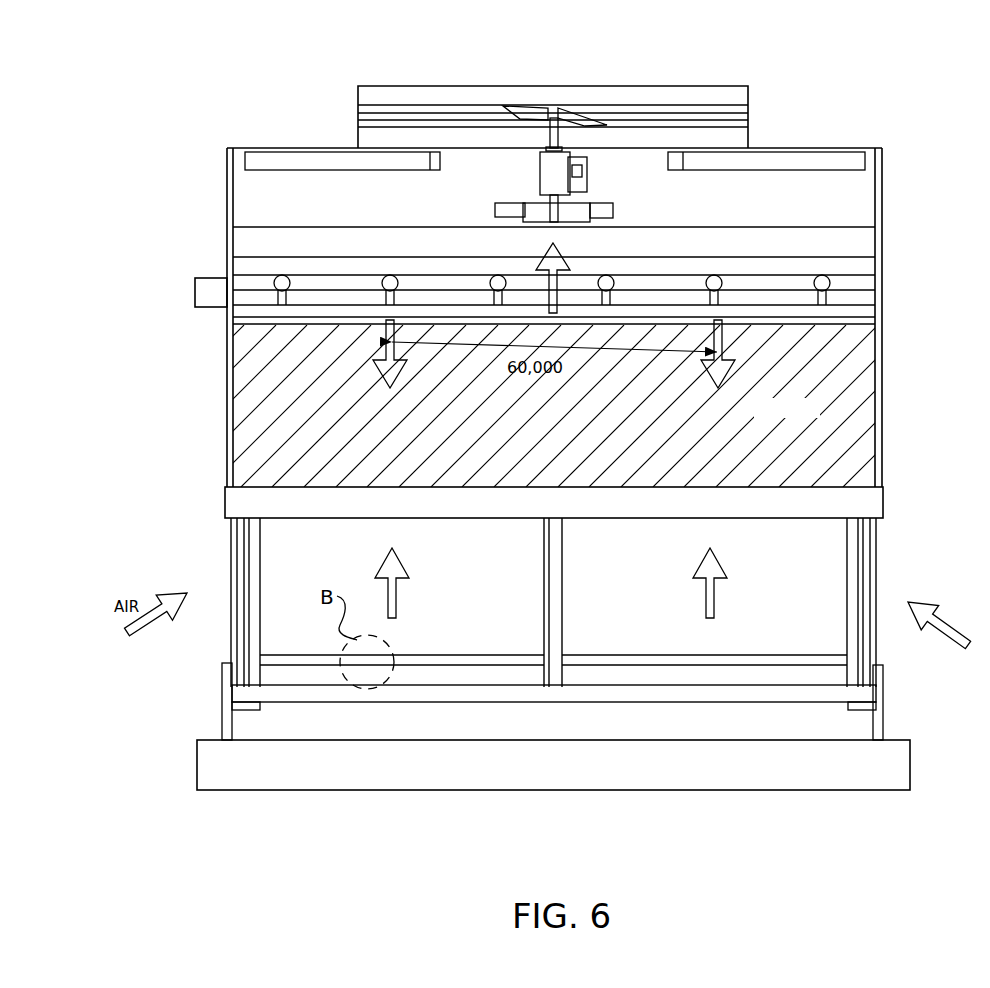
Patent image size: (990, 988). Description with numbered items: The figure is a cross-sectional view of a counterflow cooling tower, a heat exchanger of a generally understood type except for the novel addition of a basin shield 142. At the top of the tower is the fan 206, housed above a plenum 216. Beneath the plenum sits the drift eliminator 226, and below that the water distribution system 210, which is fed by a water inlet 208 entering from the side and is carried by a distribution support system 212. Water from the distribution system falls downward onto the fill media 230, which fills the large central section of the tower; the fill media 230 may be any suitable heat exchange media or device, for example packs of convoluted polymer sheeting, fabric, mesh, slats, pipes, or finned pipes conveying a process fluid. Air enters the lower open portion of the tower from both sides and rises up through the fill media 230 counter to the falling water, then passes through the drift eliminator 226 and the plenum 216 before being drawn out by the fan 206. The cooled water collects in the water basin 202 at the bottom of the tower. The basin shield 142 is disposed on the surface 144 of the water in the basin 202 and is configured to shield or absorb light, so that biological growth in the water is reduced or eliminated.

The basin shield 142 is at (500, 655).
The surface of water 144 is at (300, 671).
The water basin 202 is at (437, 742).
The fan 206 is at (448, 105).
The water inlet 208 is at (196, 278).
The water distribution system 210 is at (498, 282).
The distribution support system 212 is at (865, 301).
The plenum 216 is at (865, 183).
The drift eliminator 226 is at (327, 252).
The fill media 230 is at (327, 332).